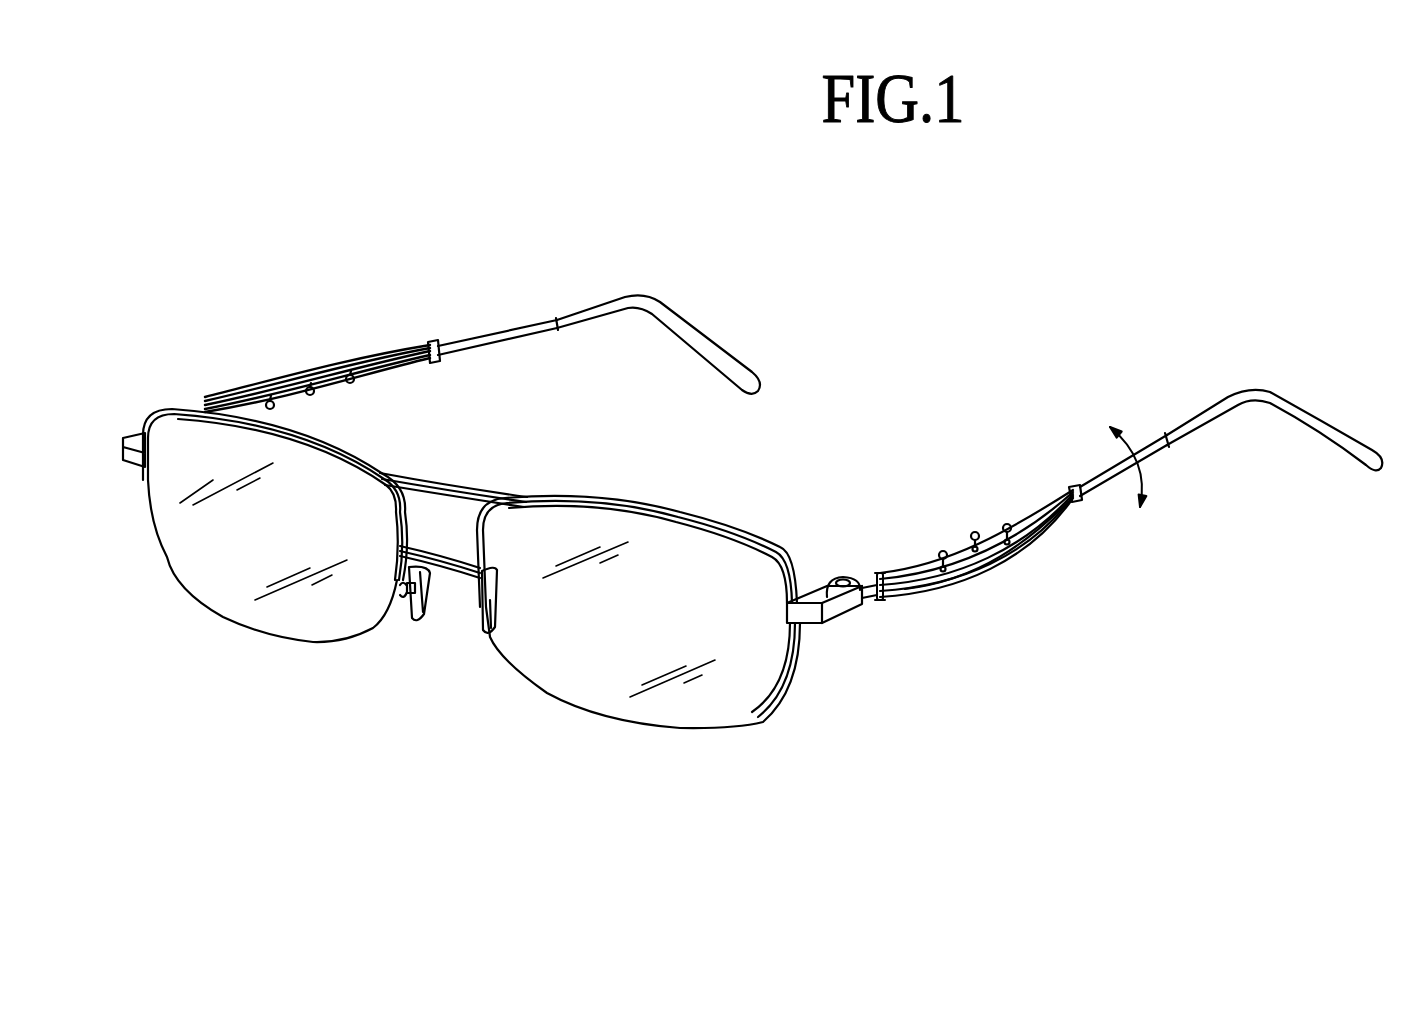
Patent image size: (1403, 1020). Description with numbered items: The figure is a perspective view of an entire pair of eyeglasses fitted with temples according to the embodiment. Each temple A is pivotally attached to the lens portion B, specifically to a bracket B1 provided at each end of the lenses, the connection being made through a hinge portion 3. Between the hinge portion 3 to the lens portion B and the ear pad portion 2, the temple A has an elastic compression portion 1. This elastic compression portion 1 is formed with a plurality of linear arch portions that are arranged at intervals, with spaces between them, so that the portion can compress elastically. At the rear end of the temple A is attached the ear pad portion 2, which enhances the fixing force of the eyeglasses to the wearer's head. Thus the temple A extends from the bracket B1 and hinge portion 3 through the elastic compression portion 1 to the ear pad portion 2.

The elastic compression portion 1 is at (1003, 557).
The ear pad portion 2 is at (1300, 422).
The hinge portion 3 is at (870, 597).
The temple A is at (1100, 577).
The lens portion B is at (730, 731).
The bracket B1 is at (837, 607).